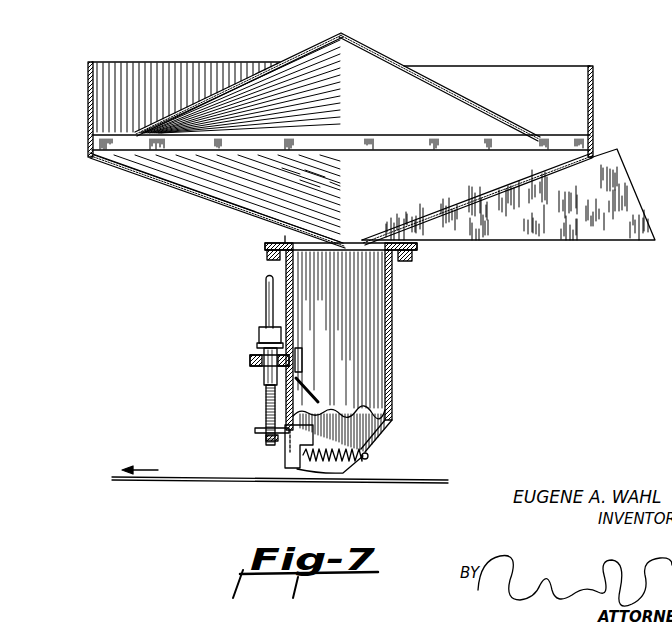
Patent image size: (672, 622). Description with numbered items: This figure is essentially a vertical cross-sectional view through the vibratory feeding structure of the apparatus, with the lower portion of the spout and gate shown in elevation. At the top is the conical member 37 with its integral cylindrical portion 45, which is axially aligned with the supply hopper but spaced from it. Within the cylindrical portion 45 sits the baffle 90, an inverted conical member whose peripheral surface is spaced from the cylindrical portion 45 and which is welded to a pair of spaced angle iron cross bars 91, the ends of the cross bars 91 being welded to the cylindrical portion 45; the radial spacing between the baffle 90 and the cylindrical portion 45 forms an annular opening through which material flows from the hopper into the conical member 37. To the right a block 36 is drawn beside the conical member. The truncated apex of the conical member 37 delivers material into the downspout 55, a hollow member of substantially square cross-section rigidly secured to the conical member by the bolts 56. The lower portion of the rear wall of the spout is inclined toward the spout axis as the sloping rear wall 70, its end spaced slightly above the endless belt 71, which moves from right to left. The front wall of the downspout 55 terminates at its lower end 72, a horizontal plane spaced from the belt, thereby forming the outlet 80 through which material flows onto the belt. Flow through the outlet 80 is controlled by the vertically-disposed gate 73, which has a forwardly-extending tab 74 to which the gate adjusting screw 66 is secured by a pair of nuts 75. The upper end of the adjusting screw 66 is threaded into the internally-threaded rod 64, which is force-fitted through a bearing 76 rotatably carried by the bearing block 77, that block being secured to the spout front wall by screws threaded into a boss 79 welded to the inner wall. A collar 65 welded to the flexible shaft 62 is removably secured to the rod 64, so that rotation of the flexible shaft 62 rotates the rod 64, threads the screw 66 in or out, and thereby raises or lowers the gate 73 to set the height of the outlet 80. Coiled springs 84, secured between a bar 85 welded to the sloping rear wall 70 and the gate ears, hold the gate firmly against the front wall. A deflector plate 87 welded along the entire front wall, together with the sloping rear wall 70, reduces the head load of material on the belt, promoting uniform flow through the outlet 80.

The block 36 is at (642, 150).
The conical member 37 is at (182, 193).
The cylindrical portion 45 is at (89, 102).
The downspout 55 is at (432, 357).
The bolts 56 is at (265, 253).
The flexible shaft 62 is at (265, 290).
The internally-threaded rod 64 is at (257, 345).
The collar 65 is at (260, 330).
The gate adjusting screw 66 is at (265, 402).
The sloping rear wall 70 is at (377, 437).
The endless belt 71 is at (430, 480).
The lower end of spout front wall 72 is at (290, 455).
The gate 73 is at (290, 468).
The tab 74 is at (268, 440).
The nuts 75 is at (255, 428).
The bearing 76 is at (263, 372).
The bearing block 77 is at (252, 360).
The boss 79 is at (298, 353).
The outlet 80 is at (300, 473).
The coiled springs 84 is at (327, 458).
The bar 85 is at (366, 460).
The deflector plate 87 is at (307, 393).
The baffle 90 is at (375, 52).
The angle iron cross bars 91 is at (563, 135).